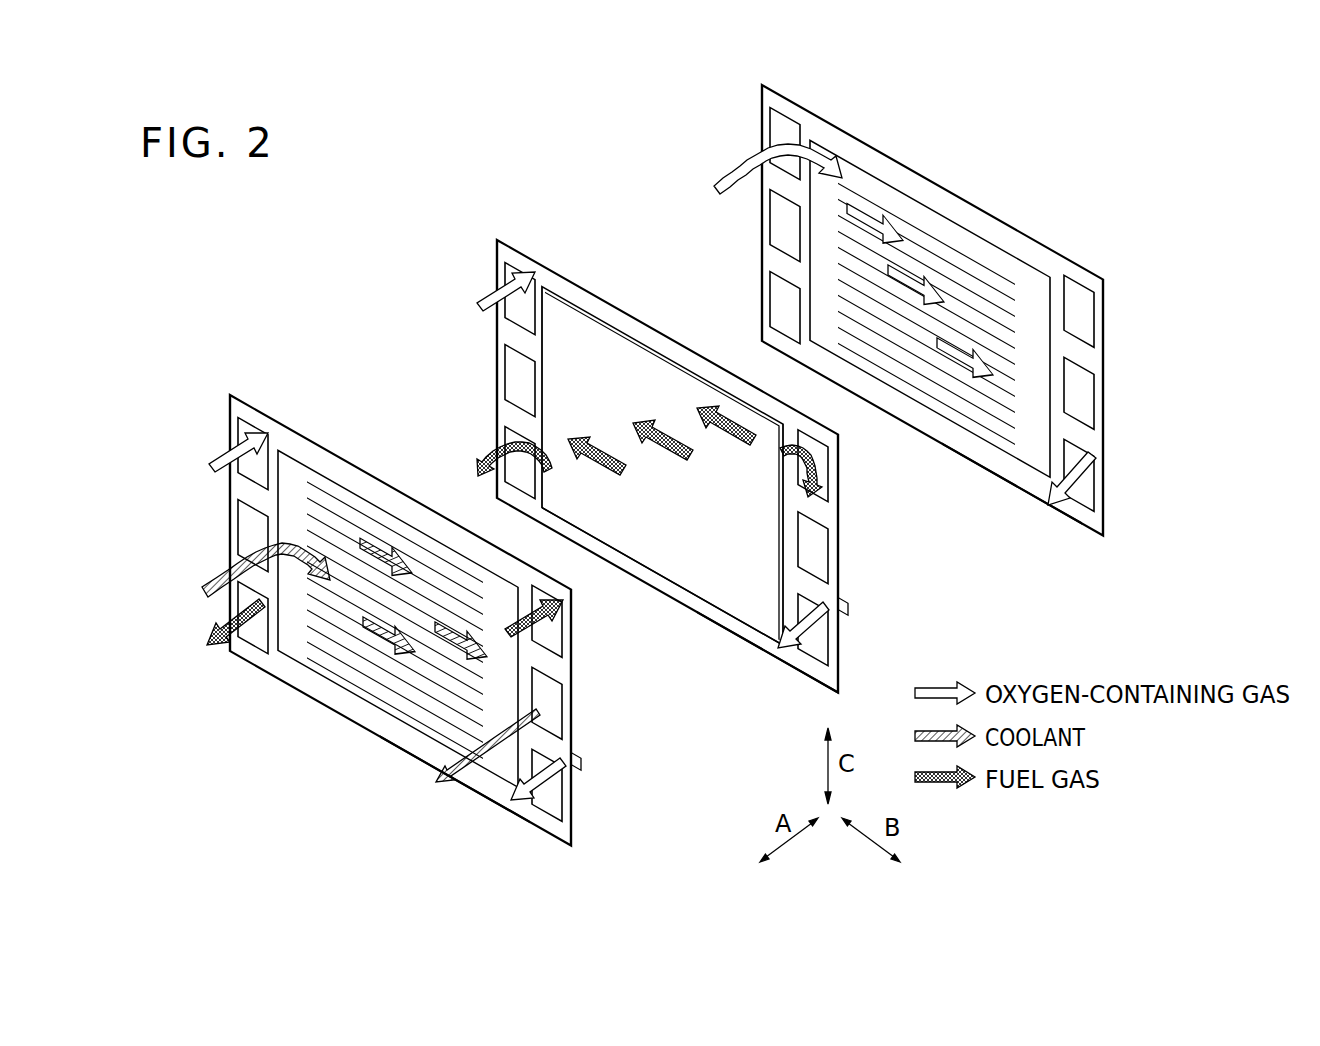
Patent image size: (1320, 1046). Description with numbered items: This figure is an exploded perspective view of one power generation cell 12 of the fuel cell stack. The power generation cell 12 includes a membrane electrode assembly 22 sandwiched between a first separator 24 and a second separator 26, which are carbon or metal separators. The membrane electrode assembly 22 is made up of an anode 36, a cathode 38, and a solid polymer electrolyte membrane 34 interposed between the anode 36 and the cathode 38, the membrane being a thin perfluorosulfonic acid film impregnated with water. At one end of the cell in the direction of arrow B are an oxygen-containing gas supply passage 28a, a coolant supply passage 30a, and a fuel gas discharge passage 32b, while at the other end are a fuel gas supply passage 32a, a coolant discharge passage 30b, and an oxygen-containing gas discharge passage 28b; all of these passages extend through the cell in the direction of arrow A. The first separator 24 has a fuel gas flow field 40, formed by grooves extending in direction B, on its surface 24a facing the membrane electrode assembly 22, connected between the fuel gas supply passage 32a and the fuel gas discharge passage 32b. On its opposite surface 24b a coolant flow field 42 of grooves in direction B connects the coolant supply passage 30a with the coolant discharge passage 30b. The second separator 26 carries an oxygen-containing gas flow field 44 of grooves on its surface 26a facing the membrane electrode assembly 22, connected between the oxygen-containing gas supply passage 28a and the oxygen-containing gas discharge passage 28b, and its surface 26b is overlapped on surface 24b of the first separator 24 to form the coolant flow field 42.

The power generation cell 12 is at (258, 252).
The membrane electrode assembly 22 is at (496, 238).
The first separator 24 is at (229, 393).
The second separator 26 is at (766, 84).
The oxygen-containing gas supply passage 28a is at (245, 430).
The oxygen-containing gas discharge passage 28b is at (568, 801).
The coolant supply passage 30a is at (247, 551).
The coolant discharge passage 30b is at (565, 725).
The fuel gas supply passage 32a is at (560, 634).
The fuel gas discharge passage 32b is at (240, 600).
The solid polymer electrolyte membrane 34 is at (795, 658).
The anode 36 is at (744, 613).
The cathode 38 is at (617, 355).
The fuel gas flow field 40 is at (331, 492).
The coolant flow field 42 is at (334, 664).
The oxygen-containing gas flow field 44 is at (975, 237).
The surface of first separator facing the membrane electrode assembly 24a is at (475, 777).
The surface of first separator 24b is at (422, 748).
The surface of second separator facing the membrane electrode assembly 26a is at (1010, 468).
The surface of second separator 26b is at (933, 418).